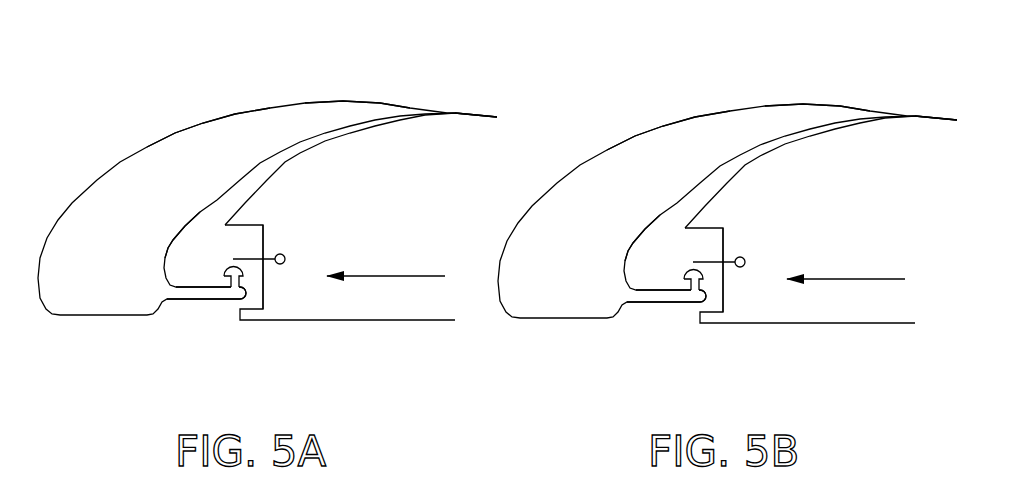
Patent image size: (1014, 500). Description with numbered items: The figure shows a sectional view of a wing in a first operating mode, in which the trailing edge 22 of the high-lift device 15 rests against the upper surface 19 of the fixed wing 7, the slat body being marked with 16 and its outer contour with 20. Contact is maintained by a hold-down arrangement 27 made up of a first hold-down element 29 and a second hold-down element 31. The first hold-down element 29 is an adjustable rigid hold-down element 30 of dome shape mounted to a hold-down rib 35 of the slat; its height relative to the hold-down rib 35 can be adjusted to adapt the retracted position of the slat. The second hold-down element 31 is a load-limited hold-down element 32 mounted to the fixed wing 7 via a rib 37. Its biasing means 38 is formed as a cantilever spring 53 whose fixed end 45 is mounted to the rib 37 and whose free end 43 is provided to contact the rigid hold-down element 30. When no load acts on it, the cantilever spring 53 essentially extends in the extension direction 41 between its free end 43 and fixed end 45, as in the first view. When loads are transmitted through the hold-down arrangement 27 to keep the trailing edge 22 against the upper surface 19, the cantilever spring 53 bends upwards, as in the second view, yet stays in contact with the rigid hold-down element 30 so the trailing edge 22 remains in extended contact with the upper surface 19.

In FIG. 5A, the fixed wing 7 is at (447, 175).
In FIG. 5B, the fixed wing 7 is at (924, 148).
In FIG. 5A, the high-lift device 15 is at (267, 208).
In FIG. 5B, the high-lift device 15 is at (727, 211).
In FIG. 5A, the leading edge skin body 16 is at (91, 280).
In FIG. 5B, the leading edge skin body 16 is at (727, 211).
In FIG. 5A, the upper surface 19 is at (477, 113).
In FIG. 5B, the upper surface 19 is at (934, 73).
In FIG. 5A, the leading edge outer surface 20 is at (203, 124).
In FIG. 5B, the leading edge outer surface 20 is at (668, 88).
In FIG. 5A, the trailing edge 22 is at (375, 102).
In FIG. 5B, the trailing edge 22 is at (817, 73).
In FIG. 5A, the hold-down arrangement 27 is at (238, 243).
In FIG. 5B, the hold-down arrangement 27 is at (606, 191).
In FIG. 5A, the first hold-down element 29 is at (268, 334).
In FIG. 5B, the first hold-down element 29 is at (728, 336).
In FIG. 5A, the rigid hold-down element 30 is at (232, 288).
In FIG. 5B, the rigid hold-down element 30 is at (728, 336).
In FIG. 5A, the second hold-down element 31 is at (356, 298).
In FIG. 5B, the second hold-down element 31 is at (817, 299).
In FIG. 5A, the load-limited hold-down element 32 is at (356, 298).
In FIG. 5B, the load-limited hold-down element 32 is at (817, 299).
In FIG. 5A, the hold-down rib 35 is at (182, 288).
In FIG. 5B, the hold-down rib 35 is at (646, 335).
In FIG. 5A, the rib 37 is at (265, 238).
In FIG. 5B, the rib 37 is at (800, 251).
In FIG. 5A, the biasing means 38 is at (356, 298).
In FIG. 5B, the biasing means 38 is at (817, 299).
In FIG. 5A, the extension direction 41 is at (390, 276).
In FIG. 5B, the extension direction 41 is at (857, 240).
In FIG. 5A, the free end 43 is at (213, 253).
In FIG. 5B, the free end 43 is at (800, 182).
In FIG. 5A, the fixed end 45 is at (292, 255).
In FIG. 5B, the fixed end 45 is at (792, 238).
In FIG. 5A, the cantilever spring 53 is at (263, 266).
In FIG. 5B, the cantilever spring 53 is at (817, 299).